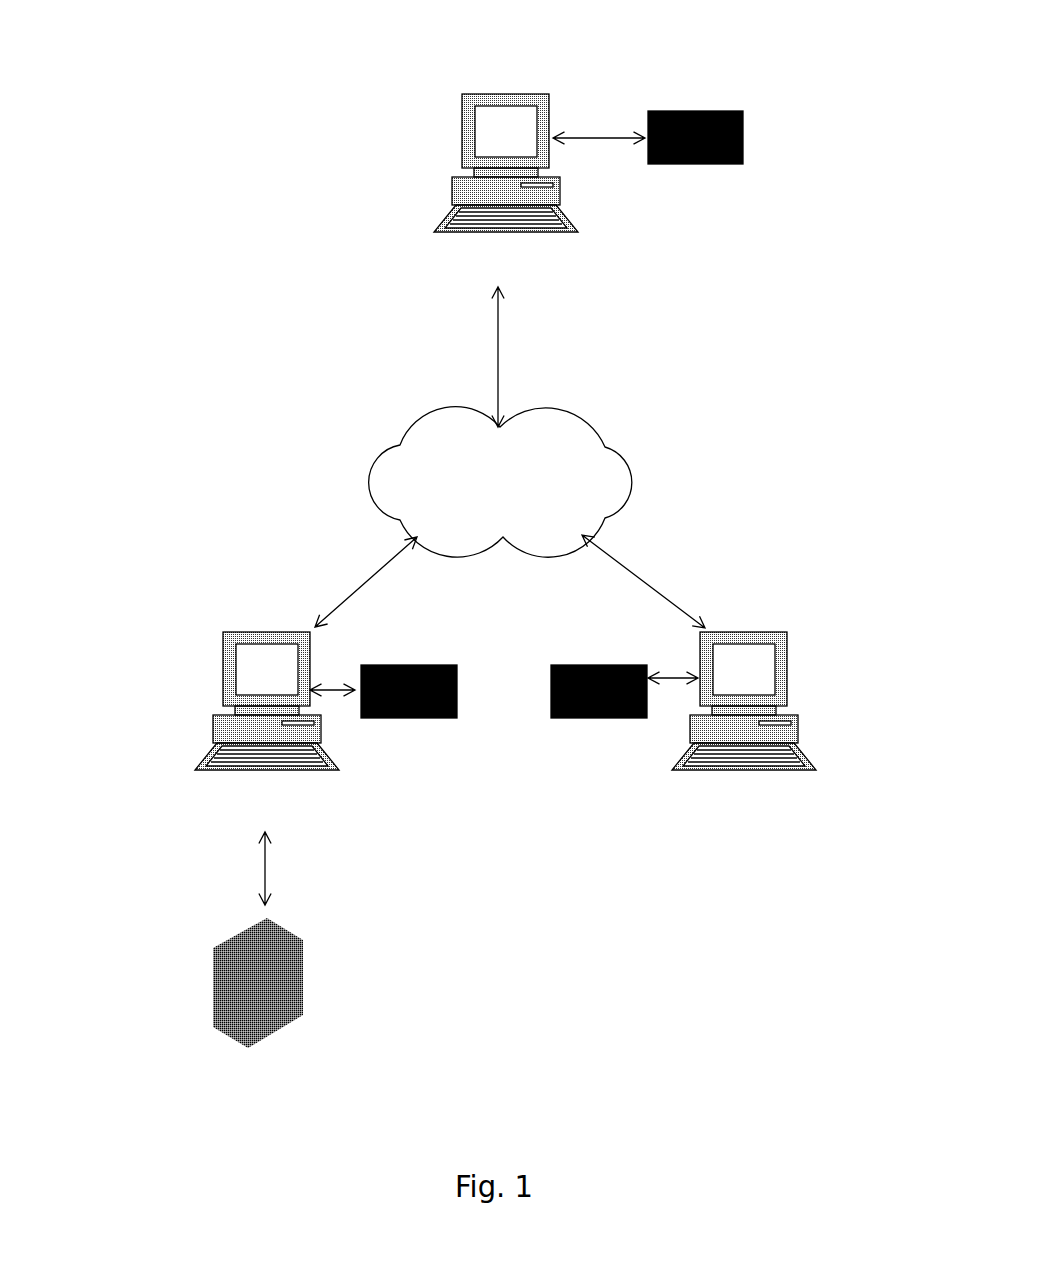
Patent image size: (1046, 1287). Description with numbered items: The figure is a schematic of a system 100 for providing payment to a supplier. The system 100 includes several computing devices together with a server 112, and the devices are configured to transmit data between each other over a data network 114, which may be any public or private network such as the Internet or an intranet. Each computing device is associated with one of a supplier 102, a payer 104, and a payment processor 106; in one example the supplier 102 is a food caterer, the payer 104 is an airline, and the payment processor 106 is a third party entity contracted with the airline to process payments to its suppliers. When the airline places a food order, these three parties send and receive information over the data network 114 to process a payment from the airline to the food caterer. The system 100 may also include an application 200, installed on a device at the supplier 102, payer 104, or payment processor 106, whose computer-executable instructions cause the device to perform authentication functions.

The system 100 is at (712, 396).
The supplier 102 is at (456, 188).
The payer 104 is at (797, 724).
The payment processor 106 is at (256, 724).
The server 112 is at (282, 1015).
The data network 114 is at (324, 489).
The application 200 is at (744, 102).